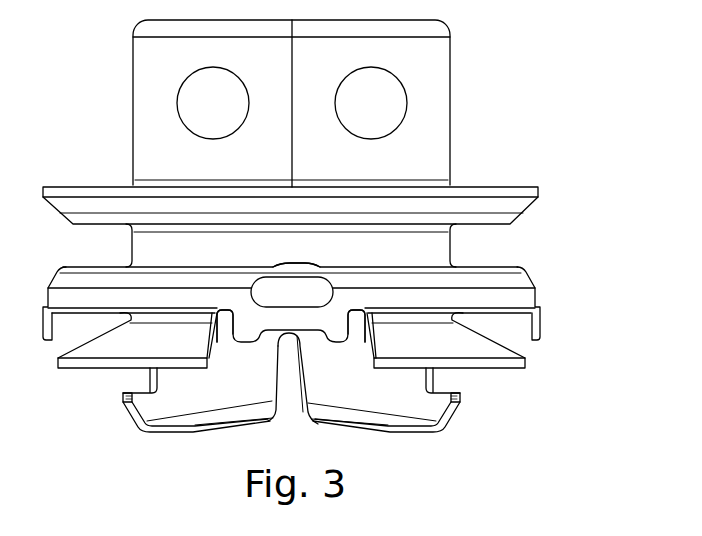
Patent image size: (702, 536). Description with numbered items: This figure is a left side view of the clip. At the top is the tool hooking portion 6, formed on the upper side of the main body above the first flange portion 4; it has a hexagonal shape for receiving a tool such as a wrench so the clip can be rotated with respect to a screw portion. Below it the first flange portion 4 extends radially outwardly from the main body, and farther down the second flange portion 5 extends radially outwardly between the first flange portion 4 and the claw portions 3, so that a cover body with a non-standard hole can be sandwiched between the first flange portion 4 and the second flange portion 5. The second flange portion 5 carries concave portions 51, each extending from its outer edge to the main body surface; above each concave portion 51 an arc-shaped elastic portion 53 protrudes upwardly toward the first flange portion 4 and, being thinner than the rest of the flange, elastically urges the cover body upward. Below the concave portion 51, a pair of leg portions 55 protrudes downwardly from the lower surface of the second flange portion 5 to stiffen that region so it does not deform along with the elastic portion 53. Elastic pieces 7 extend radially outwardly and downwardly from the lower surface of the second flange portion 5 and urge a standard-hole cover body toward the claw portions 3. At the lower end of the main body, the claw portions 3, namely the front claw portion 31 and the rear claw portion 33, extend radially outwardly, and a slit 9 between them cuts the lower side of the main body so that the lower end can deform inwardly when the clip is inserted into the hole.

The claw portion 3 is at (303, 382).
The first flange portion 4 is at (540, 188).
The second flange portion 5 is at (307, 312).
The tool hooking portion 6 is at (272, 110).
The elastic piece 7 is at (148, 350).
The slit 9 is at (286, 383).
The front claw portion 31 is at (462, 395).
The rear claw portion 33 is at (122, 396).
The concave portion 51 is at (287, 290).
The elastic portion 53 is at (292, 271).
The leg portion 55 is at (242, 333).